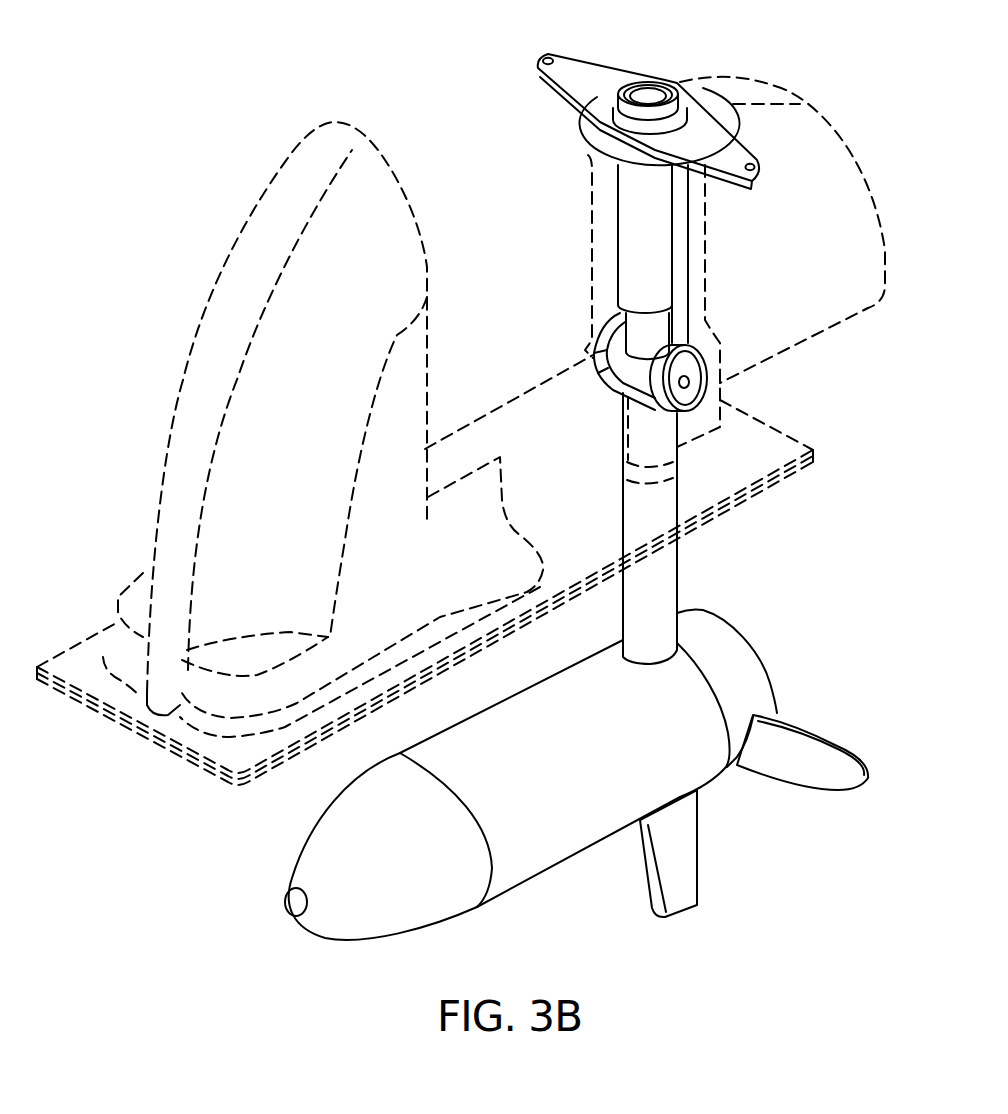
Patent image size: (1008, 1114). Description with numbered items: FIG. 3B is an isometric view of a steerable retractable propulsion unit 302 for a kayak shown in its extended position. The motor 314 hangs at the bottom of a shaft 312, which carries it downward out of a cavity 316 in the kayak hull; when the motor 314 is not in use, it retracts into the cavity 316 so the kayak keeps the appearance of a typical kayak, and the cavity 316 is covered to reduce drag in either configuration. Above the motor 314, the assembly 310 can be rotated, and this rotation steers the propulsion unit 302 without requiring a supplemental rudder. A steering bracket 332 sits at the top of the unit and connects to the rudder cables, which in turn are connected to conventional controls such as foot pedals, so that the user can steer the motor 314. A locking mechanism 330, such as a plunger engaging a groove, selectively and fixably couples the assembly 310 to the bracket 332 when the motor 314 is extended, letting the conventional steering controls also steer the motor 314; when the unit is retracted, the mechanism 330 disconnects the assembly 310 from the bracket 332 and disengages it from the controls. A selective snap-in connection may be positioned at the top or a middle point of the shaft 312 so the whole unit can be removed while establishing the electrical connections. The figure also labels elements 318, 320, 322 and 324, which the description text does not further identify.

The propulsion unit 302 is at (179, 187).
The assembly 310 is at (680, 272).
The shaft 312 is at (653, 583).
The motor 314 is at (575, 815).
The cavity 316 is at (178, 497).
The mounting platform 318 is at (238, 760).
The pivot bracket 320 is at (698, 408).
The pivot disc 322 is at (690, 380).
The fin 324 is at (796, 757).
The locking mechanism 330 is at (643, 222).
The steering bracket 332 is at (572, 72).